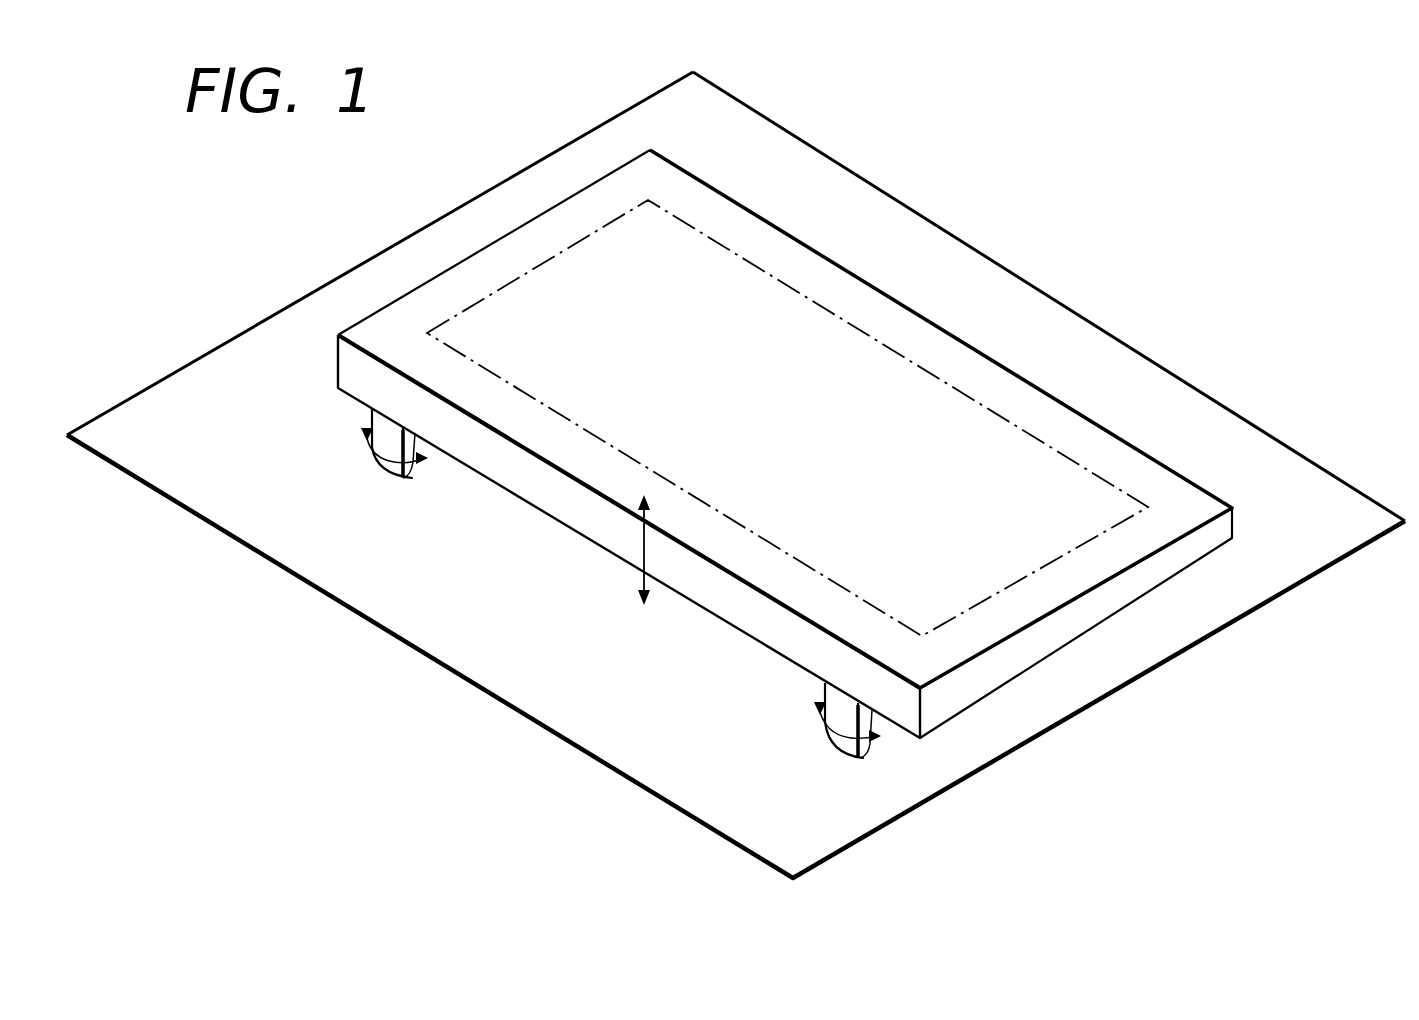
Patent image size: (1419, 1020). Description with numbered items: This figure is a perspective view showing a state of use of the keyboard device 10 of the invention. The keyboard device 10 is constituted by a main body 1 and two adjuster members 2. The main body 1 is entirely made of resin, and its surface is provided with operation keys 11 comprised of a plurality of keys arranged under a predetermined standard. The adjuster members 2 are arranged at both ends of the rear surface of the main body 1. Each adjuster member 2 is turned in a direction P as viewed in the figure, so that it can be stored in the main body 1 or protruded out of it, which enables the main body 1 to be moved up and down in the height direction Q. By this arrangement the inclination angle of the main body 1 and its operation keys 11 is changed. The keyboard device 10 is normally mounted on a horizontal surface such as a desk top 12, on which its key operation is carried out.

The main body 1 is at (785, 482).
The keyboard device 10 is at (833, 259).
The operation keys 11 is at (870, 336).
The desk top 12 is at (482, 663).
The adjuster members 2 is at (397, 468).
The direction P is at (377, 457).
The height direction Q is at (640, 545).